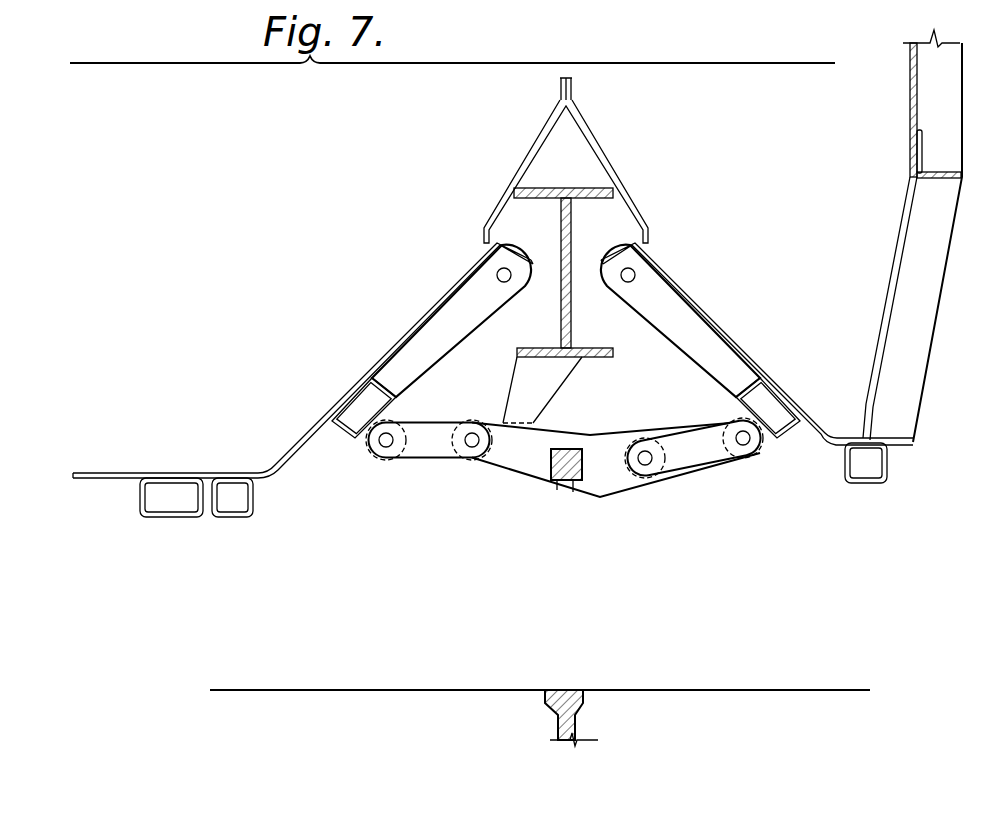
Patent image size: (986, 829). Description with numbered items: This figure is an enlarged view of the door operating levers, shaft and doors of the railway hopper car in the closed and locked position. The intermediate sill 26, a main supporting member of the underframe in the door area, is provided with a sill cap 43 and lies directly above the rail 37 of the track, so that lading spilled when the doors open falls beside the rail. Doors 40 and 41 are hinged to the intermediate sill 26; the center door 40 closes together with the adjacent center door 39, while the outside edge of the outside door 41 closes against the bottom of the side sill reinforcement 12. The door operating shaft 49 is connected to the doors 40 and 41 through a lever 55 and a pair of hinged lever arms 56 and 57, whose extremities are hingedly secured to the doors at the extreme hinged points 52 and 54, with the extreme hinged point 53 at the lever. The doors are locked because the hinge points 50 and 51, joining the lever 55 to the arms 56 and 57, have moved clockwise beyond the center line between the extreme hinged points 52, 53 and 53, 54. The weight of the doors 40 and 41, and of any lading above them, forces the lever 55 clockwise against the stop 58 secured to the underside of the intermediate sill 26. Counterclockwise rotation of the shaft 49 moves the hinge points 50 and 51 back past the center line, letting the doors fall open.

The side sill reinforcement 12 is at (927, 445).
The intermediate sill 26 is at (571, 226).
The rail 37 is at (575, 722).
The door 39 is at (117, 473).
The door 40 is at (441, 303).
The door 41 is at (700, 308).
The sill cap 43 is at (572, 81).
The door operating shaft 49 is at (580, 498).
The hinge point 50 is at (472, 447).
The hinge point 51 is at (648, 463).
The extreme hinged point 52 is at (387, 445).
The extreme hinged point 53 is at (557, 483).
The extreme hinged point 54 is at (745, 442).
The lever 55 is at (535, 469).
The lever arm 56 is at (432, 455).
The lever arm 57 is at (708, 460).
The stop 58 is at (515, 385).